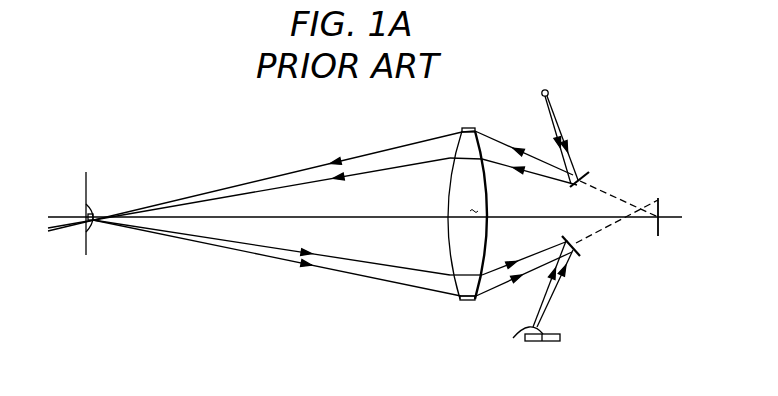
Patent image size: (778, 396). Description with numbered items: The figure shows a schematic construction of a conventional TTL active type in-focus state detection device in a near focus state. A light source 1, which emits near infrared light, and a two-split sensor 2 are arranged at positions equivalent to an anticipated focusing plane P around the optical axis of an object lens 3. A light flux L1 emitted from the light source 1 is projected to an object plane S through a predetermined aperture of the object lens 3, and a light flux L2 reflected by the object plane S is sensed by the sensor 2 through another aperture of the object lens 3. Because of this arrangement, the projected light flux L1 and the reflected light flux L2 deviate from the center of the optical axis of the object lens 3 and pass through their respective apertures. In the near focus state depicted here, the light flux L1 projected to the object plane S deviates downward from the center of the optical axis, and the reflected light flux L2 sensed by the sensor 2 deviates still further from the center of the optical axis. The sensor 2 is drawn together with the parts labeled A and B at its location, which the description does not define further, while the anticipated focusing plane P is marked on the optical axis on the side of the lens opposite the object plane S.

The light source 1 is at (547, 90).
The two-split sensor 2 is at (550, 330).
The object lens 3 is at (465, 127).
The object plane S is at (86, 183).
The projected light flux L1 is at (346, 158).
The reflected light flux L2 is at (333, 270).
The anticipated focusing plane P is at (652, 231).
The detector A is at (532, 343).
The filter element B is at (555, 343).